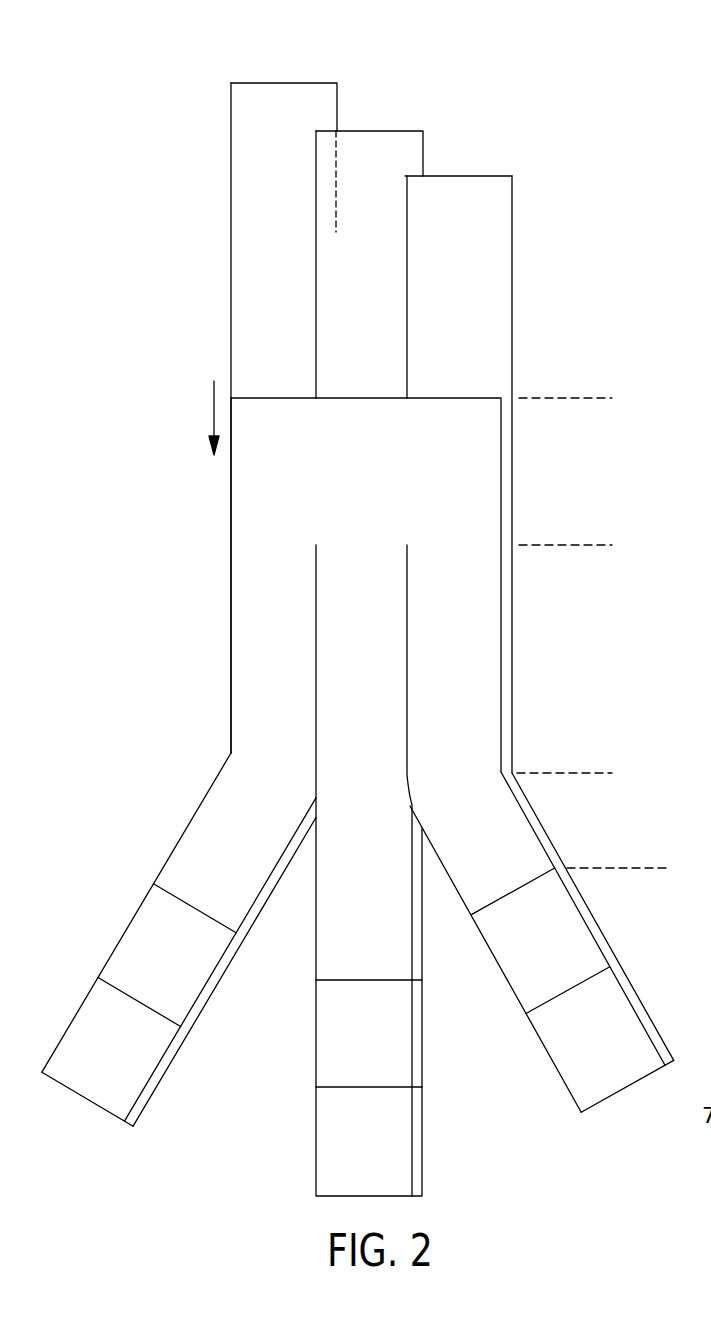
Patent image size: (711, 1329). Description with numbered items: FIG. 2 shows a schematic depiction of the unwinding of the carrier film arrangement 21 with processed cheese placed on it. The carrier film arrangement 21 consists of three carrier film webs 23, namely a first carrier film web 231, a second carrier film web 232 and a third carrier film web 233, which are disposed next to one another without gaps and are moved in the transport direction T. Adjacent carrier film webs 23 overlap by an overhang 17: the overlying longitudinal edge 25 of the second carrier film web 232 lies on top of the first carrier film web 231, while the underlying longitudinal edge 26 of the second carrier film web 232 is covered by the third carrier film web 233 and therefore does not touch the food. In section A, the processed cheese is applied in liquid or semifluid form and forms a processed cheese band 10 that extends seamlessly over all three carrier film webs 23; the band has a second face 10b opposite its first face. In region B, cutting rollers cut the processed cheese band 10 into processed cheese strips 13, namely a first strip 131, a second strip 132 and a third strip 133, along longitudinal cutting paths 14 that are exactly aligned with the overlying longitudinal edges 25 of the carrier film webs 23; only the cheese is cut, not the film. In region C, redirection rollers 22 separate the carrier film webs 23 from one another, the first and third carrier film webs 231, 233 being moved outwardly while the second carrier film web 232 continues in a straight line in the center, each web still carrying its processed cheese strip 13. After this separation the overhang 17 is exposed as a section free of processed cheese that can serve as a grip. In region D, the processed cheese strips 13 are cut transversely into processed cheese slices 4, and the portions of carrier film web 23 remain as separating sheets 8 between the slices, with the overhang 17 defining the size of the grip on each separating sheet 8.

The processed cheese band 10 is at (350, 455).
The second face of processed cheese band 10b is at (245, 524).
The processed cheese strip 13 is at (360, 623).
The first processed cheese strip 131 is at (288, 636).
The second processed cheese strip 132 is at (371, 636).
The third processed cheese strip 133 is at (456, 636).
The longitudinal cutting path 14 is at (317, 570).
The carrier film web overhang 17 is at (330, 187).
The carrier film arrangement 21 is at (311, 211).
The redirection roller 22 is at (172, 739).
The carrier film web 23 is at (378, 211).
The first carrier film web 231 is at (282, 82).
The second carrier film web 232 is at (370, 128).
The third carrier film web 233 is at (465, 257).
The overlying longitudinal edge of carrier film web 25 is at (233, 342).
The underlying longitudinal edge of carrier film web 26 is at (425, 157).
The processed cheese slice 4 is at (131, 922).
The separating sheet 8 is at (213, 993).
The transport direction T is at (212, 408).
The section A is at (577, 398).
The region B is at (577, 545).
The redirection region C is at (577, 773).
The region D is at (629, 868).